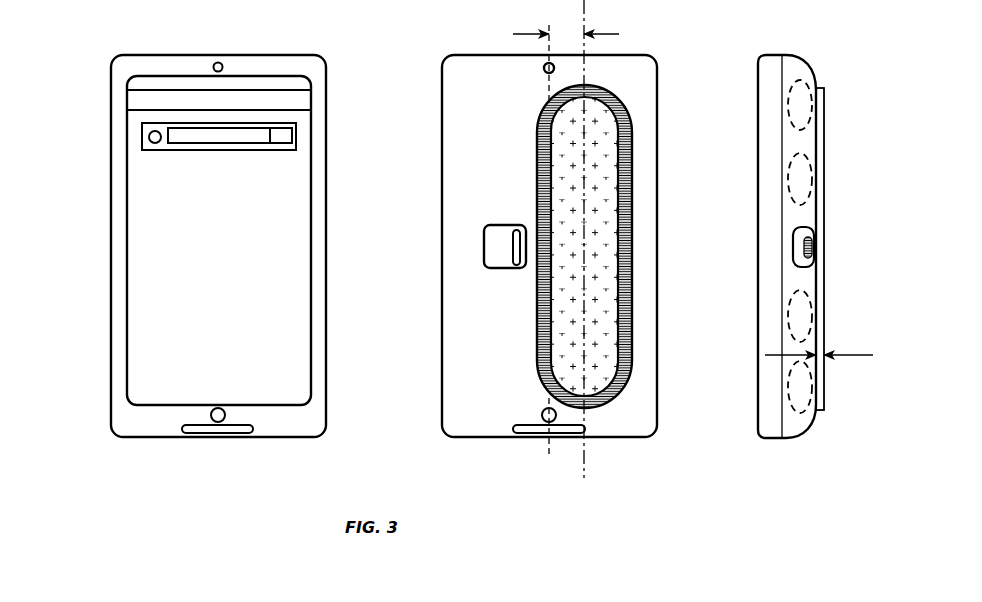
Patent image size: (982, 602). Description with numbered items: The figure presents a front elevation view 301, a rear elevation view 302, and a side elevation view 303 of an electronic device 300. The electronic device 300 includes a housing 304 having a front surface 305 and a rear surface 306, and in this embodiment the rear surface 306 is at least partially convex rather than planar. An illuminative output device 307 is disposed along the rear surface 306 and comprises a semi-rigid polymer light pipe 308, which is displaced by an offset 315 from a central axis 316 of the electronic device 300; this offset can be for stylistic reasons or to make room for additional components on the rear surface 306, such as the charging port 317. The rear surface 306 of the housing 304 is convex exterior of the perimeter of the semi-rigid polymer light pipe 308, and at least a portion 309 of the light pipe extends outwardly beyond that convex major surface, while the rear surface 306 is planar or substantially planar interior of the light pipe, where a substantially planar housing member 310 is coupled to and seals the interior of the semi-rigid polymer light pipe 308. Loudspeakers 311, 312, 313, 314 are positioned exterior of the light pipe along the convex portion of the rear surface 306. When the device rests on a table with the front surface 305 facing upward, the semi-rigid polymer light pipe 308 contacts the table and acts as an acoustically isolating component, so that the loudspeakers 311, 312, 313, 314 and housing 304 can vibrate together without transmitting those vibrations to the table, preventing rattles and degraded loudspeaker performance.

The electronic device 300 is at (83, 110).
The front elevation view 301 is at (87, 380).
The rear elevation view 302 is at (420, 382).
The side elevation view 303 is at (738, 380).
The housing 304 is at (108, 195).
The front surface 305 is at (122, 283).
The rear surface 306 is at (463, 180).
The illuminative output device 307 is at (527, 122).
The semi-rigid polymer light pipe 308 is at (537, 177).
The portion of the semi-rigid polymer light pipe 309 is at (844, 352).
The substantially planar housing member 310 is at (573, 299).
The loudspeaker 311 is at (797, 82).
The loudspeaker 312 is at (805, 160).
The loudspeaker 313 is at (803, 293).
The loudspeaker 314 is at (803, 415).
The offset 315 is at (605, 33).
The central axis 316 is at (548, 447).
The charging port 317 is at (512, 250).